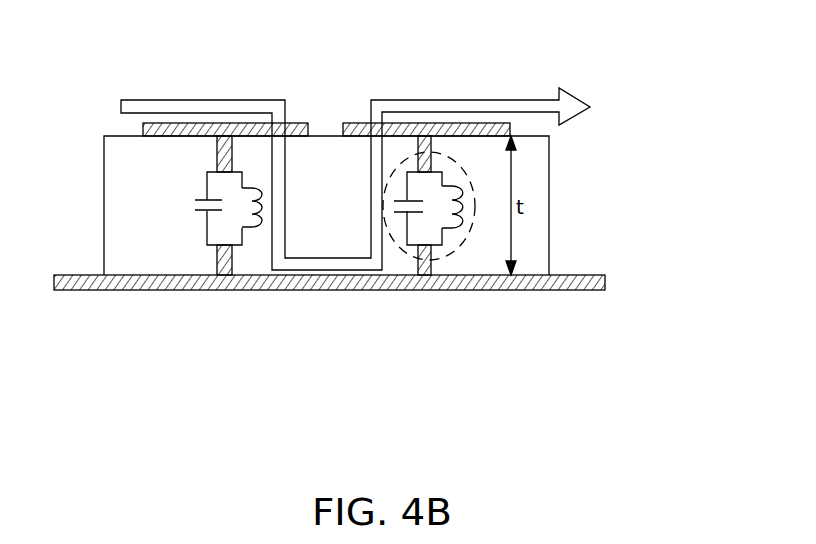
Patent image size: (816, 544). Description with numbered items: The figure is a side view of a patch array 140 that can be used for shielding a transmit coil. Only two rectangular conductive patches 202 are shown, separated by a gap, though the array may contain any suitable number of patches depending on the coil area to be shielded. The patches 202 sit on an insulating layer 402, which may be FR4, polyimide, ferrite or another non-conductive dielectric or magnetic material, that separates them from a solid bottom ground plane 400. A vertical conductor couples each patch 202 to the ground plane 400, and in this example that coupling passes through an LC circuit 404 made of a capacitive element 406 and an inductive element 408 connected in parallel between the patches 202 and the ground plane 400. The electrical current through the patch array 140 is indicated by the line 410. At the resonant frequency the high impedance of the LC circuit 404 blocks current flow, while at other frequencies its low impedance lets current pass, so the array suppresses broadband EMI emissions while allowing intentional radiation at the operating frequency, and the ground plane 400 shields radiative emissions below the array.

The patch array 140 is at (648, 108).
The patch 202 is at (352, 122).
The ground plane 400 is at (597, 275).
The insulating layer 402 is at (123, 190).
The LC circuit 404 is at (435, 263).
The capacitive element 406 is at (190, 226).
The inductive element 408 is at (252, 240).
The line 410 is at (146, 99).